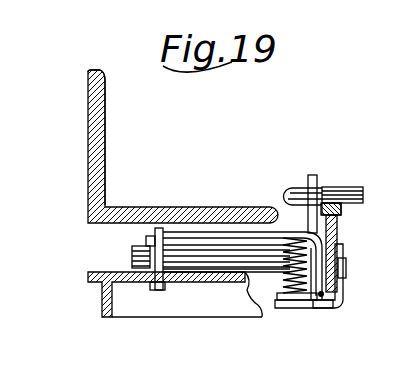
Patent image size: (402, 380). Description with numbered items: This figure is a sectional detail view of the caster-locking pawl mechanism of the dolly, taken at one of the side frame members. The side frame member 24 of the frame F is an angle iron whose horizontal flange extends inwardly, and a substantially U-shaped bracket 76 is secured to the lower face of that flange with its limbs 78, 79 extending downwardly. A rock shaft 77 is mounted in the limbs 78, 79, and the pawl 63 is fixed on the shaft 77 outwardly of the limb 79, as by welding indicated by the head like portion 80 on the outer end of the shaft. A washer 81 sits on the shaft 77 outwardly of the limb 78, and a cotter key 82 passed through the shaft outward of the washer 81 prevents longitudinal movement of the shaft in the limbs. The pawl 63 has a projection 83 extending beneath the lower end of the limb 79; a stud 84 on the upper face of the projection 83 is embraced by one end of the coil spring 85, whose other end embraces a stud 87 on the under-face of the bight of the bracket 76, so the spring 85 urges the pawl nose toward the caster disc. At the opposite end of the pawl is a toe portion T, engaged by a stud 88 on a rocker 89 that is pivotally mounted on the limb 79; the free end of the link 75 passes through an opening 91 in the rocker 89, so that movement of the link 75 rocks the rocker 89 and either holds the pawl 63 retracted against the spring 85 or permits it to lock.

The frame F is at (86, 152).
The toe portion T is at (337, 203).
The side frame member 24 is at (105, 119).
The pawl 63 is at (343, 233).
The link 75 is at (300, 190).
The U-shaped bracket 76 is at (233, 232).
The rock shaft 77 is at (213, 262).
The limb 78 is at (132, 253).
The limb 79 is at (330, 306).
The head like portion 80 is at (344, 270).
The washer 81 is at (155, 233).
The cotter key 82 is at (146, 239).
The projection 83 is at (313, 309).
The stud 84 is at (293, 294).
The coil spring 85 is at (226, 258).
The stud 87 is at (290, 237).
The stud 88 is at (358, 203).
The rocker 89 is at (318, 176).
The opening 91 is at (328, 187).